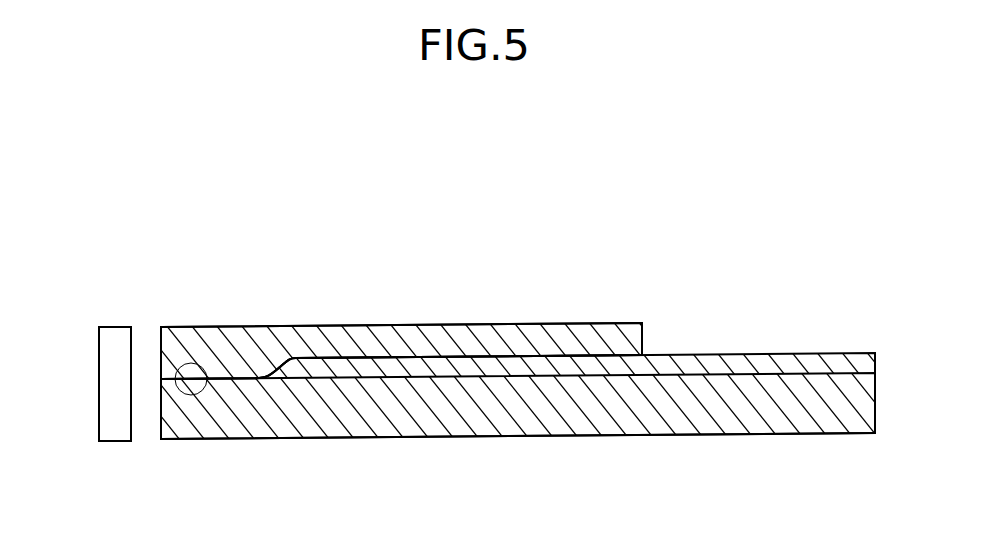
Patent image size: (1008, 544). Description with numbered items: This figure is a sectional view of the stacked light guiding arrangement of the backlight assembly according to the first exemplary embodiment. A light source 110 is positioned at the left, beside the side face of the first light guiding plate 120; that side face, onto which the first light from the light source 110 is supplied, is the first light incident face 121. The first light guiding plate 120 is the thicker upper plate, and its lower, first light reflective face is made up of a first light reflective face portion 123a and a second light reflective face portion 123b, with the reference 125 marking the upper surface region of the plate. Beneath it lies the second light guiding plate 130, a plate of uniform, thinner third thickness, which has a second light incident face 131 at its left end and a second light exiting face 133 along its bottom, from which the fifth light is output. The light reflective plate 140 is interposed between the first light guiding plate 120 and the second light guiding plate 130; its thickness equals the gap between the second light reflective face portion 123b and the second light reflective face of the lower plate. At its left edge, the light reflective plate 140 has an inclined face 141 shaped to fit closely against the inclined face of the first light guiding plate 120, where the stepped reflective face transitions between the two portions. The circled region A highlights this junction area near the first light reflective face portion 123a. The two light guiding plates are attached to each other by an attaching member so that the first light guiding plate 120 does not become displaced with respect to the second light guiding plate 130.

The light source 110 is at (112, 333).
The first light guiding plate 120 is at (473, 303).
The first light incident face 121 is at (161, 328).
The first light reflective face portion 123a is at (245, 386).
The second light reflective face portion 123b is at (376, 366).
The upper surface of upper layer 125 is at (596, 321).
The second light guiding plate 130 is at (474, 460).
The second light incident face 131 is at (161, 420).
The second light exiting face 133 is at (651, 436).
The light reflective plate 140 is at (833, 339).
The inclined face 141 is at (283, 372).
The region A is at (204, 392).